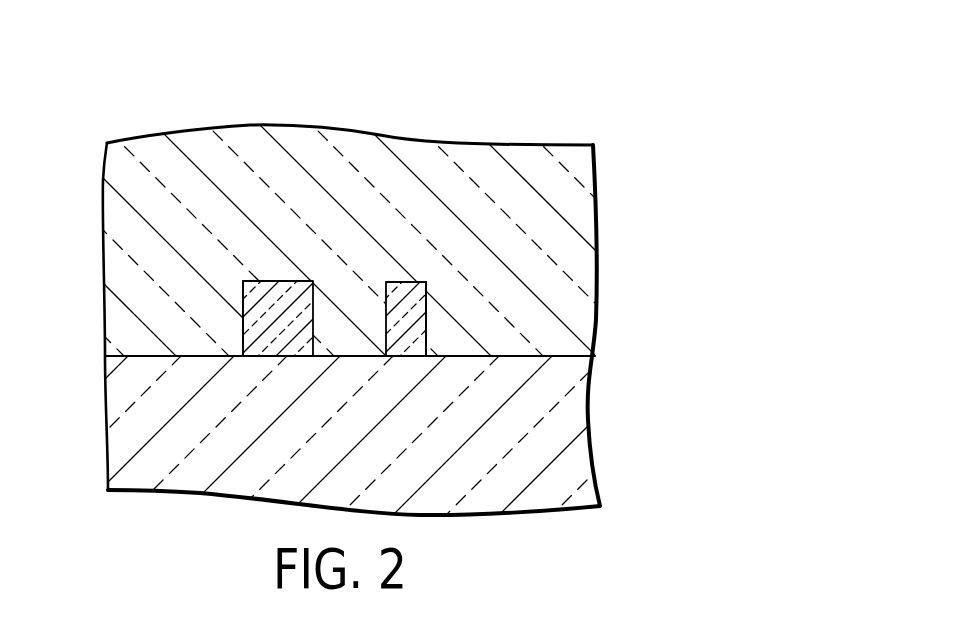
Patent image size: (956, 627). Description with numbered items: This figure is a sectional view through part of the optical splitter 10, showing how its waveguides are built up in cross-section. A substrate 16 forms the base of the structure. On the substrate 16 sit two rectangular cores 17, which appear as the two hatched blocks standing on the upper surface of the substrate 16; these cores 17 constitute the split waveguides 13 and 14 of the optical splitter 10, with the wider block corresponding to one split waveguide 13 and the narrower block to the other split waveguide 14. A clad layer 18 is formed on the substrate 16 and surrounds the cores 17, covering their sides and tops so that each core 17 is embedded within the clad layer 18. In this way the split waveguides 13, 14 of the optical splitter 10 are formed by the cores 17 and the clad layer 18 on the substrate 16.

The optical splitter 10 is at (596, 113).
The split waveguide 13 is at (277, 283).
The split waveguide 14 is at (385, 283).
The substrate 16 is at (572, 441).
The cores 17 is at (255, 329).
The clad layer 18 is at (573, 217).